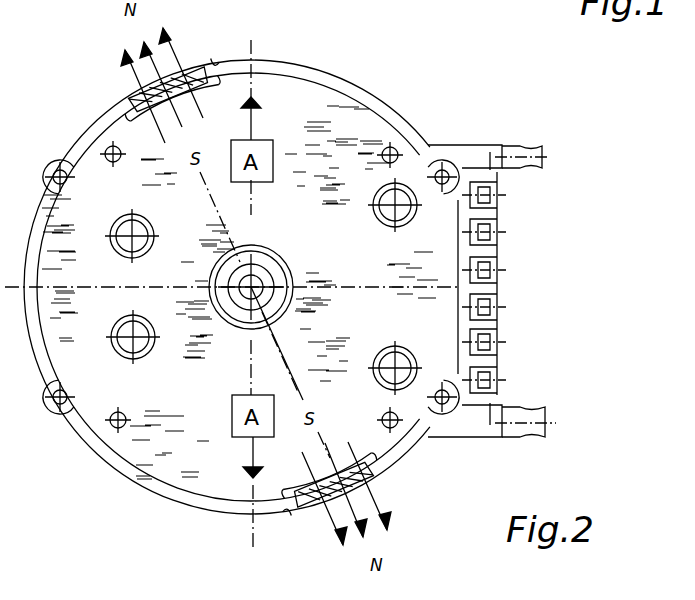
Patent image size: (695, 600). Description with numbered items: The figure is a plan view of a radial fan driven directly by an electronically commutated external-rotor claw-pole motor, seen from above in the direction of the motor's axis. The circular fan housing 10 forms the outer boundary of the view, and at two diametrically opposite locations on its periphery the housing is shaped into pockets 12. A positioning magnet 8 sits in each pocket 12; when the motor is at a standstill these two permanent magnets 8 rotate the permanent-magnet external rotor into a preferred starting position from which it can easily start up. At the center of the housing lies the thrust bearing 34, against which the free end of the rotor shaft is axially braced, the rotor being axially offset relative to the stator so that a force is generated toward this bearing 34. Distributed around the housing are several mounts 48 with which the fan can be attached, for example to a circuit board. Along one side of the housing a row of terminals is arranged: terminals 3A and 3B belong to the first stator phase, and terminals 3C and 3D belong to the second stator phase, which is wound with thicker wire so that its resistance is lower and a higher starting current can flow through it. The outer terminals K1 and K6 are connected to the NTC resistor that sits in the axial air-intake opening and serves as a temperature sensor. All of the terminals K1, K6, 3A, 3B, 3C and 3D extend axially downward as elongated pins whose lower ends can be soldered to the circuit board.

The positioning magnets 8 is at (128, 97).
The fan housing 10 is at (318, 73).
The pockets 12 is at (222, 62).
The thrust bearing 34 is at (260, 273).
The mounts 48 is at (150, 223).
The terminal K1 is at (497, 195).
The terminal 3A is at (505, 232).
The terminal 3B is at (505, 270).
The terminal 3C is at (505, 307).
The terminal 3D is at (505, 342).
The terminal K6 is at (501, 380).